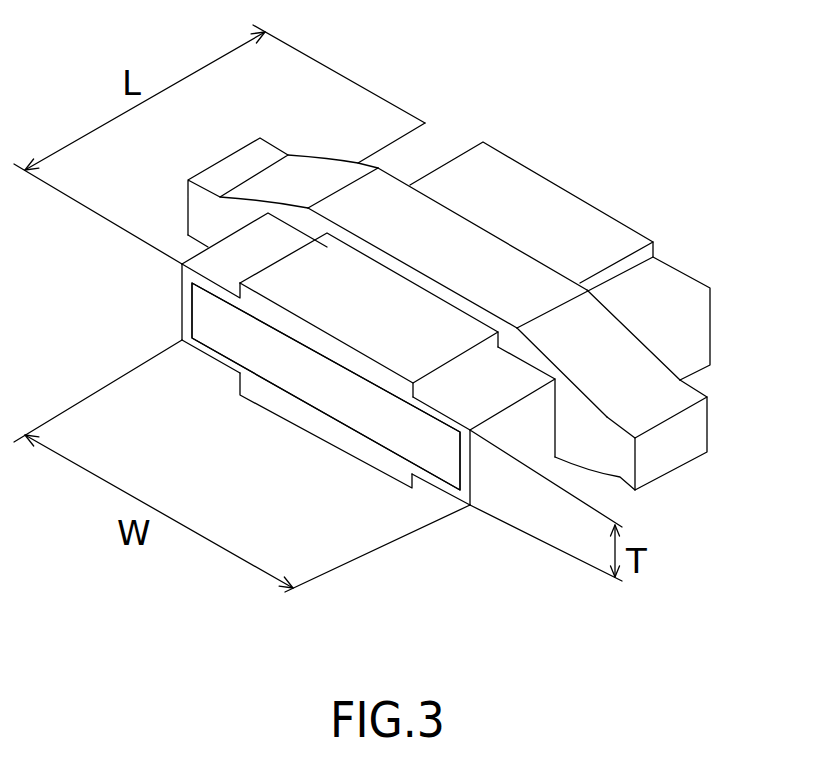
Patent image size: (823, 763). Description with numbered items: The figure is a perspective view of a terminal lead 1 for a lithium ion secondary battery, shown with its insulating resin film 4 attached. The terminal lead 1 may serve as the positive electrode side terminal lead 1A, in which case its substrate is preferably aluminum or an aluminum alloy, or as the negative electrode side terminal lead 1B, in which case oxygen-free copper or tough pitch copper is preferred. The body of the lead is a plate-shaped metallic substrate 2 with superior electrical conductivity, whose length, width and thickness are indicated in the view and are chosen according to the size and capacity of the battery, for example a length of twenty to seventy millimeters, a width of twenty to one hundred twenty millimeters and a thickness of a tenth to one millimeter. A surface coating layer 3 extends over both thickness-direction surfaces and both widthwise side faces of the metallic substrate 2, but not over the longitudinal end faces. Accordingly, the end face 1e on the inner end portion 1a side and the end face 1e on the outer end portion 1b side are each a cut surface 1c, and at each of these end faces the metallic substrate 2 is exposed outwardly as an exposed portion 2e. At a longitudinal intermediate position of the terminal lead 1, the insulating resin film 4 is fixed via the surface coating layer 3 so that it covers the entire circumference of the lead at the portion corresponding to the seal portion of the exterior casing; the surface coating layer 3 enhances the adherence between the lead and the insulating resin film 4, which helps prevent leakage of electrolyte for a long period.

The terminal lead 1 is at (693, 68).
The positive electrode side terminal lead 1A is at (336, 279).
The negative electrode side terminal lead 1B is at (591, 279).
The inner end portion 1a is at (357, 303).
The outer end portion 1b is at (575, 232).
The cut surface 1c is at (326, 386).
The end face 1e is at (252, 337).
The metallic substrate 2 is at (317, 380).
The exposed portion 2e is at (357, 412).
The surface coating layer 3 is at (272, 392).
The insulating resin film 4 is at (648, 413).